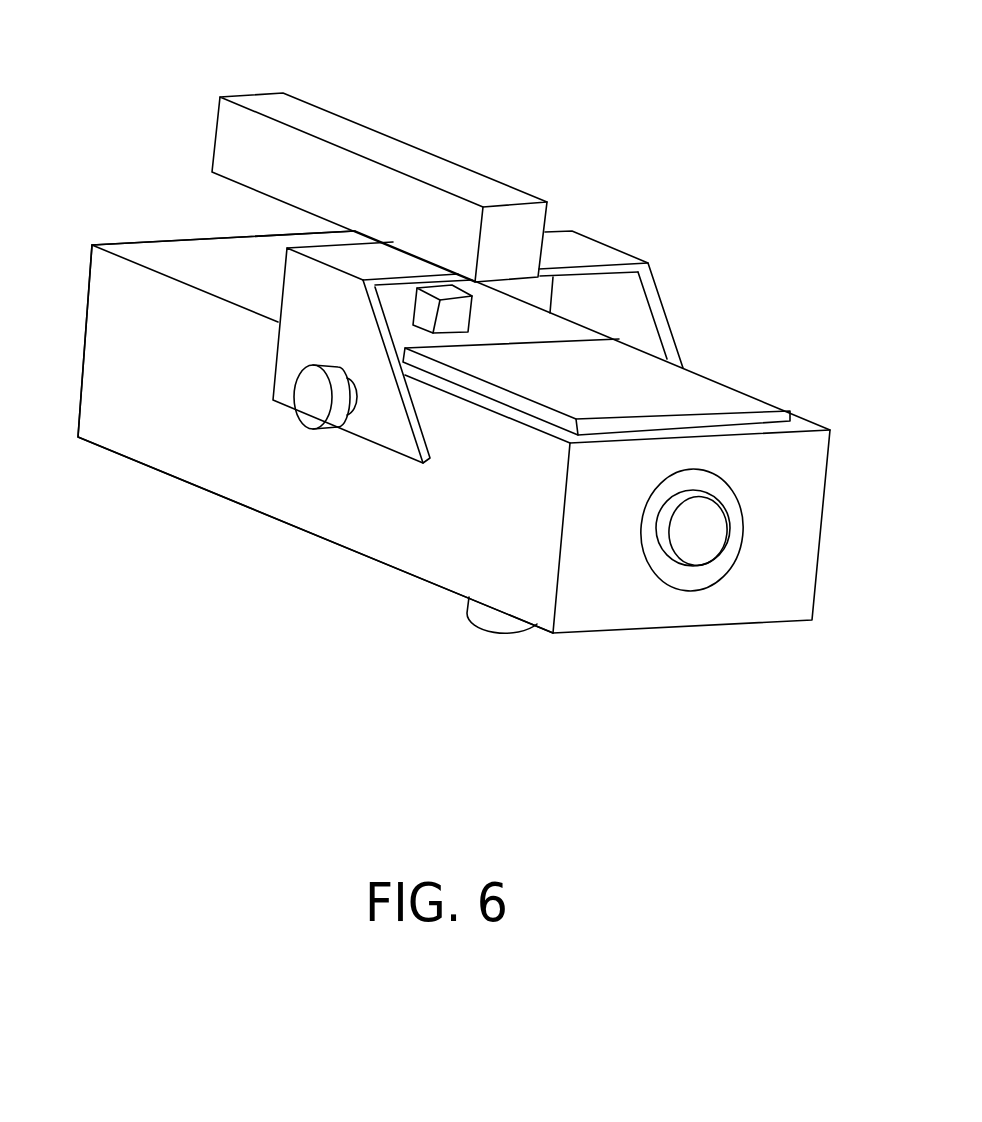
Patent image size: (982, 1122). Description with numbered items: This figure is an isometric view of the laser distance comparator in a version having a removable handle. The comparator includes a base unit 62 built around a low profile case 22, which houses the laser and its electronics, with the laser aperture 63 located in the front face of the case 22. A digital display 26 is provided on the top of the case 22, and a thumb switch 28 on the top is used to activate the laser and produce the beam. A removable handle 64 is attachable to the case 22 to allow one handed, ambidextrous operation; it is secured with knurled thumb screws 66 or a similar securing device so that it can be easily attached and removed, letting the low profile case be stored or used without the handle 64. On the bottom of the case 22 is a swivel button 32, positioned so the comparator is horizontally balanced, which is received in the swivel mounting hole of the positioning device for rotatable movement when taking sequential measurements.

The low profile case 22 is at (441, 394).
The digital display 26 is at (643, 368).
The thumb switch 28 is at (452, 312).
The swivel button 32 is at (490, 623).
The base unit 62 is at (196, 470).
The laser aperture 63 is at (705, 538).
The removable handle 64 is at (372, 148).
The knurled thumb screws 66 is at (318, 404).